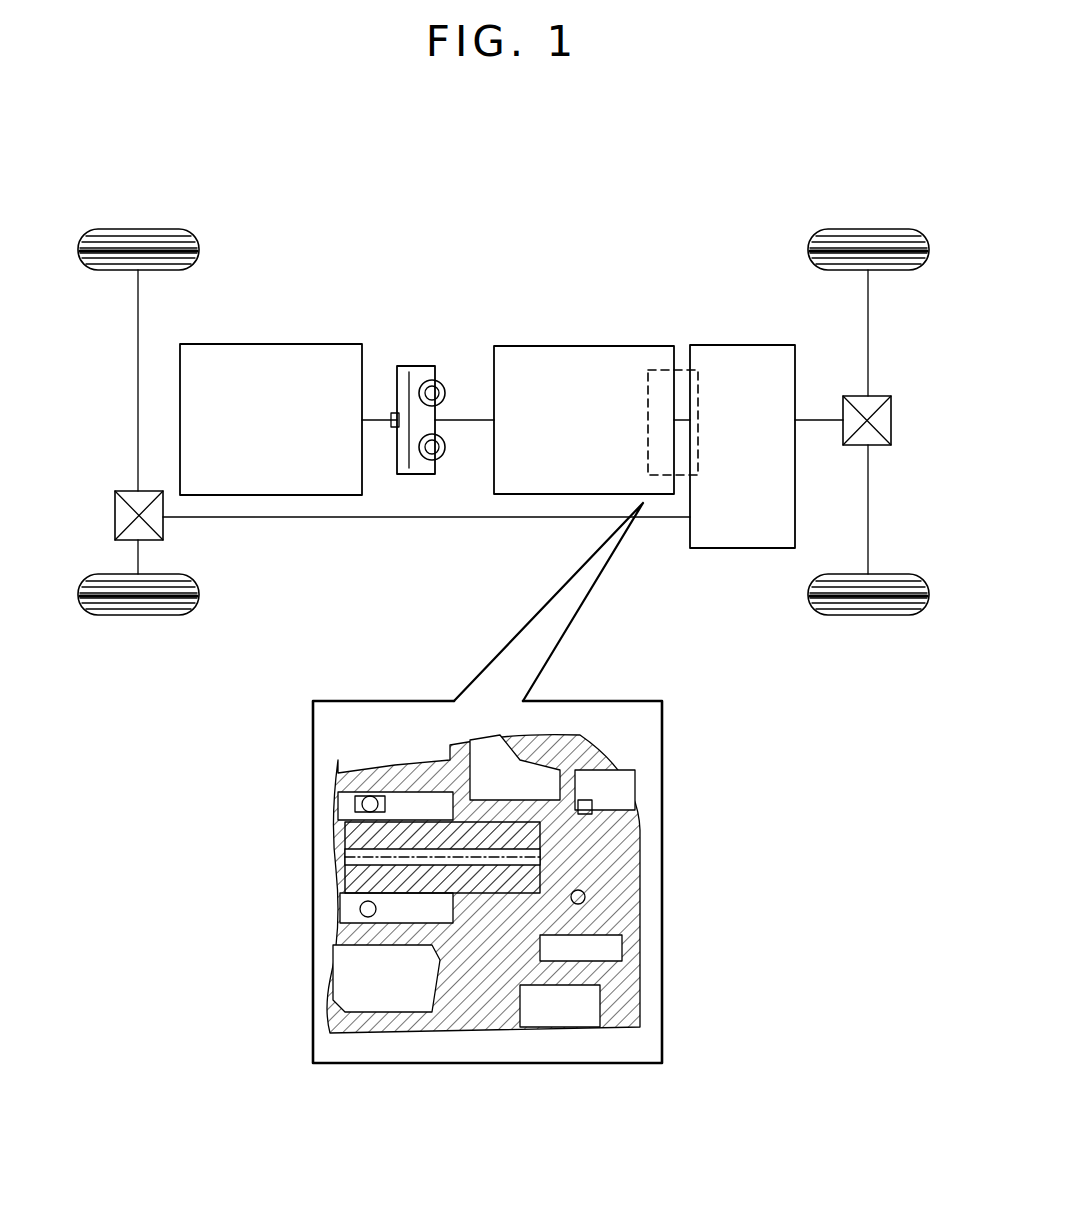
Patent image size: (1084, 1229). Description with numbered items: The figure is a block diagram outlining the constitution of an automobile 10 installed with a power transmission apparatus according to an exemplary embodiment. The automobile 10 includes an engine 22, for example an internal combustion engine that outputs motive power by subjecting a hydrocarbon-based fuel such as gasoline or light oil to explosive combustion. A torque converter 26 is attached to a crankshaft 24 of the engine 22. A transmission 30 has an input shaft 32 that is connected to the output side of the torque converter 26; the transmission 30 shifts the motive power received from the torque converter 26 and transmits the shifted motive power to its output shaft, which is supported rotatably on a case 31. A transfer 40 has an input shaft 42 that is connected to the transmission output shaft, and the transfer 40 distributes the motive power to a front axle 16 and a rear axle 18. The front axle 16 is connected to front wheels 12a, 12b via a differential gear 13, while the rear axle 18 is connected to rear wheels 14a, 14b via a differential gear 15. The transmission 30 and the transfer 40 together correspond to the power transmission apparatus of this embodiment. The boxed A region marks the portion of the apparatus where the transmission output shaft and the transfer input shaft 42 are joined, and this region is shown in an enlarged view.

The automobile 10 is at (556, 246).
The front wheel 12a is at (134, 228).
The front wheel 12b is at (132, 616).
The differential gear 13 is at (114, 490).
The rear wheel 14a is at (867, 228).
The rear wheel 14b is at (869, 616).
The differential gear 15 is at (851, 395).
The front axle 16 is at (371, 518).
The rear axle 18 is at (823, 421).
The engine 22 is at (265, 344).
The crankshaft 24 is at (370, 418).
The torque converter 26 is at (417, 366).
The transmission 30 is at (581, 346).
The case 31 is at (412, 780).
The input shaft 32 is at (476, 418).
The transfer 40 is at (739, 345).
The input shaft 42 is at (613, 845).
The A region A is at (661, 496).